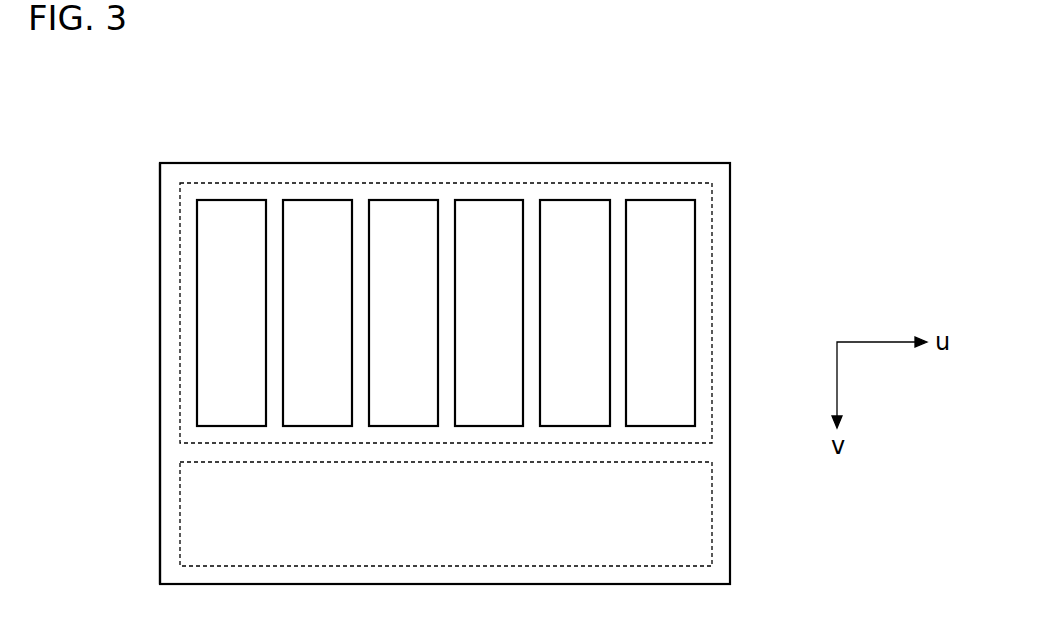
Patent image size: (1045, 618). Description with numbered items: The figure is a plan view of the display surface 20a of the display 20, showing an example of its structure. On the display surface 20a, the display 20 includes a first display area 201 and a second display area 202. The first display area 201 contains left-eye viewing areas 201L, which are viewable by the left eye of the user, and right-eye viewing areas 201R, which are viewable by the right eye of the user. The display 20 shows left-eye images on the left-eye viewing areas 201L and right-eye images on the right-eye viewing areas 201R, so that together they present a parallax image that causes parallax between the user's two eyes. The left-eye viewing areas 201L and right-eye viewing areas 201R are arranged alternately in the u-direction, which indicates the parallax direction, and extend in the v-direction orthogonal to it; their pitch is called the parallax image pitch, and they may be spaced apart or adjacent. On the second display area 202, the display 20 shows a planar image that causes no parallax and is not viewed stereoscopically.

The display 20 is at (773, 158).
The display surface 20a is at (159, 217).
The first display area 201 is at (712, 252).
The second display area 202 is at (712, 516).
The left-eye viewing areas 201L is at (230, 215).
The right-eye viewing areas 201R is at (317, 215).